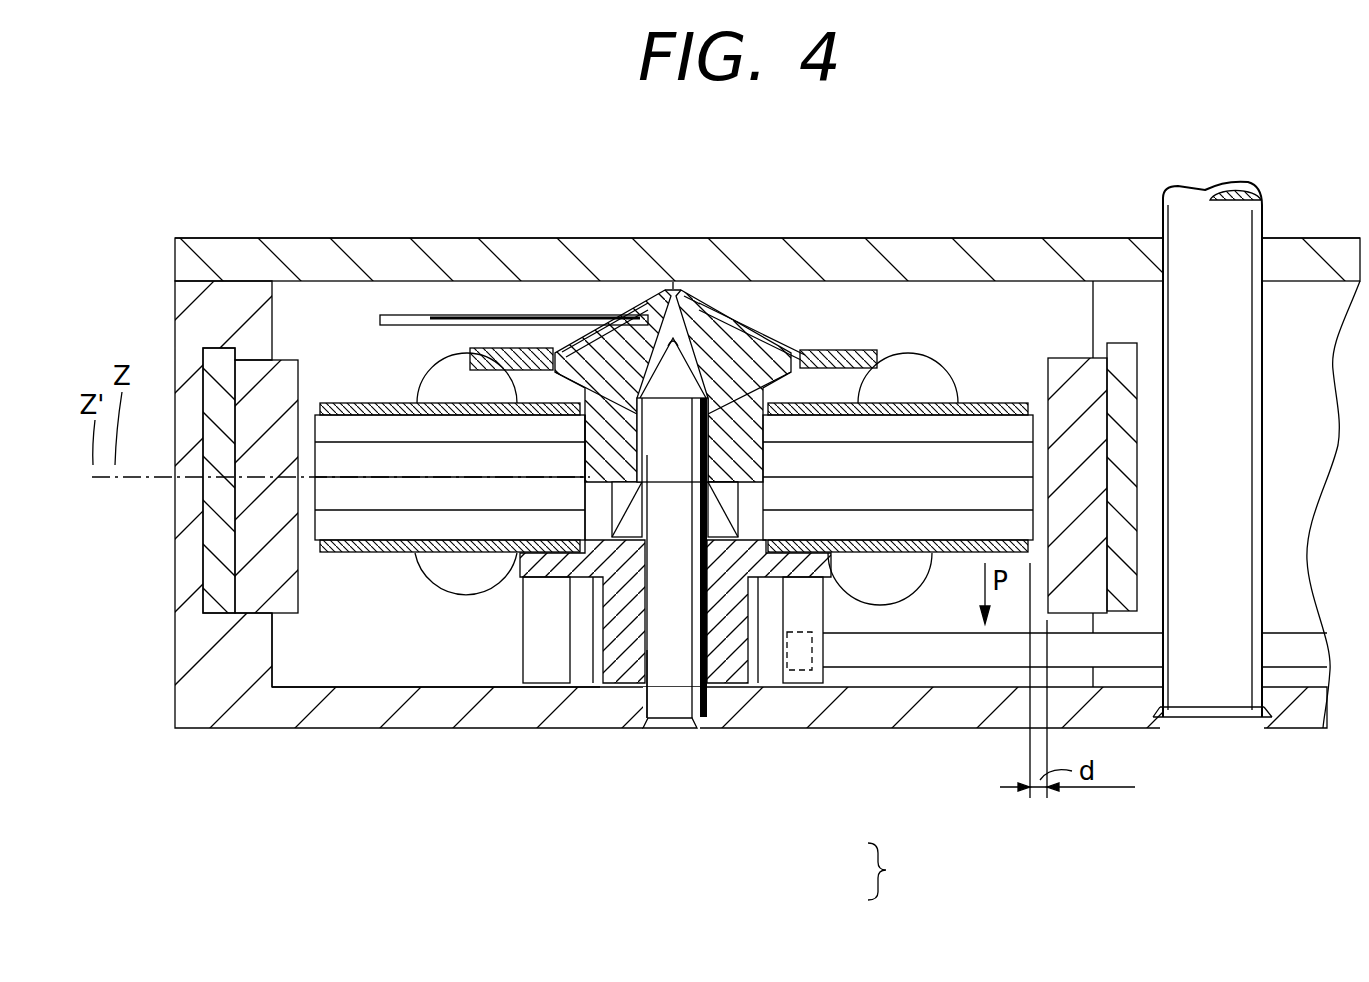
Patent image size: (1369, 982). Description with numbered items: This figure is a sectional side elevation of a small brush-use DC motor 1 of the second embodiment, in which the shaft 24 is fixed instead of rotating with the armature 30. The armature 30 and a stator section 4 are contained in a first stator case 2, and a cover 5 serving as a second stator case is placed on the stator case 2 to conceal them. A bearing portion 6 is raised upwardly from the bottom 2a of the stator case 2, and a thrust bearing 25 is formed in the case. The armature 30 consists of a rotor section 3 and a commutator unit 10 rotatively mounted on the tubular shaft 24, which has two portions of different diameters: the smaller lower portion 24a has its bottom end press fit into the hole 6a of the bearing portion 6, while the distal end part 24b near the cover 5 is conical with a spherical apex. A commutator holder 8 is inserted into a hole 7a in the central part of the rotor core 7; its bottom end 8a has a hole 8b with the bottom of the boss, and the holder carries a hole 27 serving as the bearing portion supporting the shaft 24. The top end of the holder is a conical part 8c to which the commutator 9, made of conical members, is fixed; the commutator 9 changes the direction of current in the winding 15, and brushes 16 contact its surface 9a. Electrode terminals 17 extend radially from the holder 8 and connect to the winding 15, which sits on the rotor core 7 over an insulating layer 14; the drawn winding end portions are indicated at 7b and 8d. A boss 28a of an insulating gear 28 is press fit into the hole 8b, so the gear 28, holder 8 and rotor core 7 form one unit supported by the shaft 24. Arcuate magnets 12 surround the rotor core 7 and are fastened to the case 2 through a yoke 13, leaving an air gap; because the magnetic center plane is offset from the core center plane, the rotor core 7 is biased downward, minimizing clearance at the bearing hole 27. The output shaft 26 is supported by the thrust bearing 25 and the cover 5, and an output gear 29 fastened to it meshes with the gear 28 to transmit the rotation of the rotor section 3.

The small brush-use DC motor 1 is at (1047, 220).
The first stator case 2 is at (195, 310).
The bottom 2a is at (450, 672).
The rotor section 3 is at (423, 625).
The stator section 4 is at (285, 655).
The cover 5 is at (455, 256).
The bearing portion 6 is at (637, 620).
The hole 6a is at (693, 722).
The rotor core 7 is at (327, 552).
The hole 7a is at (583, 470).
The coil winding 7b is at (953, 400).
The commutator holder 8 is at (785, 325).
The bottom end 8a is at (755, 522).
The hole having the bottom of the boss 8b is at (733, 497).
The conical part 8c is at (692, 302).
The armature arm 8d is at (805, 340).
The commutator 9 is at (745, 350).
The surface 9a is at (600, 340).
The commutator unit 10 is at (800, 296).
The arcuate magnet 12 is at (262, 368).
The yoke 13 is at (212, 345).
The insulating layer 14 is at (330, 397).
The winding 15 is at (420, 362).
The brush 16 is at (380, 318).
The electrode terminal 17 is at (860, 350).
The shaft 24 is at (713, 583).
The lower portion 24a is at (667, 703).
The distal end part 24b is at (673, 335).
The thrust bearing 25 is at (1258, 722).
The output shaft 26 is at (1240, 255).
The hole 27 is at (665, 345).
The gear 28 is at (578, 580).
The boss 28a is at (623, 520).
The output gear 29 is at (893, 652).
The armature 30 is at (875, 872).